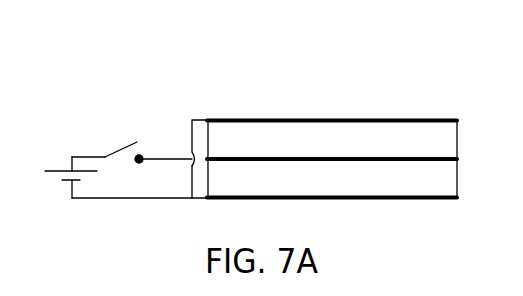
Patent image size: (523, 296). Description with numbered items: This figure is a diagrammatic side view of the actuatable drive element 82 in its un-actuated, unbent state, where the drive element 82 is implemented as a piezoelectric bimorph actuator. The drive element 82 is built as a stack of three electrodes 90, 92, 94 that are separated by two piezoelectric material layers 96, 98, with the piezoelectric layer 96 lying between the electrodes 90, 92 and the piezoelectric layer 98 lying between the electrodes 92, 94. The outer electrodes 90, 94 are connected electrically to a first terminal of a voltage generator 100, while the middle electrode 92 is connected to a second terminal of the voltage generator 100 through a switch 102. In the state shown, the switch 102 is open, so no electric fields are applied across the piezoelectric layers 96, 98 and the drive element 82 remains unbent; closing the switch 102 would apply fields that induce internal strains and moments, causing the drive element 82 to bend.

The drive element 82 is at (332, 152).
The electrode 90 is at (338, 97).
The electrode 92 is at (408, 153).
The electrode 94 is at (400, 200).
The piezoelectric material layer 96 is at (225, 132).
The piezoelectric material layer 98 is at (215, 182).
The voltage generator 100 is at (65, 218).
The switch 102 is at (125, 146).